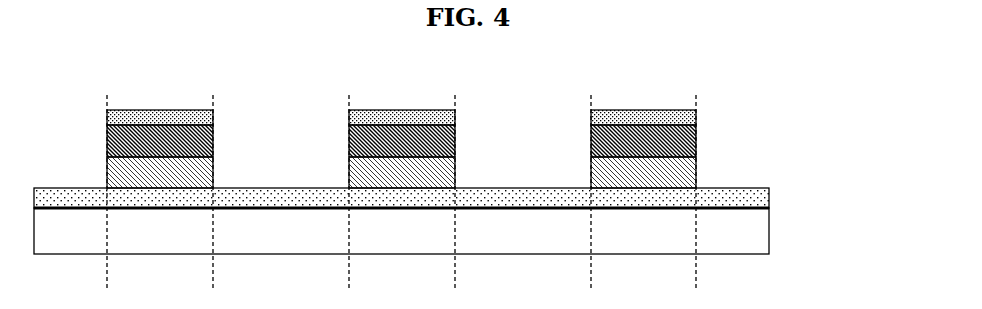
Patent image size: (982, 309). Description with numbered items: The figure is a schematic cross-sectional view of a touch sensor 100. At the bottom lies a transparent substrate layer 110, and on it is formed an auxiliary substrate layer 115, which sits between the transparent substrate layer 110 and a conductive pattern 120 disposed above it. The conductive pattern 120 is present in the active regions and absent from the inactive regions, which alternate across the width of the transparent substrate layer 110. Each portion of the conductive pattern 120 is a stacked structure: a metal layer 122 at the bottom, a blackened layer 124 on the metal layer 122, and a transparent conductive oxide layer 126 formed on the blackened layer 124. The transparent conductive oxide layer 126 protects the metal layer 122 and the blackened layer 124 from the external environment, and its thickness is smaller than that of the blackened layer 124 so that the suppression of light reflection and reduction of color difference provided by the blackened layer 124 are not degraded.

The touch sensor 100 is at (39, 84).
The transparent substrate layer 110 is at (745, 238).
The auxiliary substrate layer 115 is at (745, 200).
The conductive pattern 120 is at (506, 145).
The metal layer 122 is at (697, 172).
The blackened layer 124 is at (697, 142).
The transparent conductive oxide layer 126 is at (697, 117).